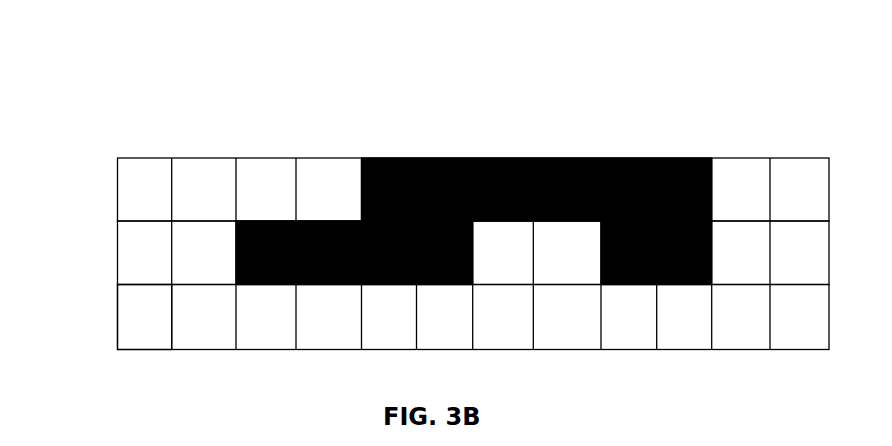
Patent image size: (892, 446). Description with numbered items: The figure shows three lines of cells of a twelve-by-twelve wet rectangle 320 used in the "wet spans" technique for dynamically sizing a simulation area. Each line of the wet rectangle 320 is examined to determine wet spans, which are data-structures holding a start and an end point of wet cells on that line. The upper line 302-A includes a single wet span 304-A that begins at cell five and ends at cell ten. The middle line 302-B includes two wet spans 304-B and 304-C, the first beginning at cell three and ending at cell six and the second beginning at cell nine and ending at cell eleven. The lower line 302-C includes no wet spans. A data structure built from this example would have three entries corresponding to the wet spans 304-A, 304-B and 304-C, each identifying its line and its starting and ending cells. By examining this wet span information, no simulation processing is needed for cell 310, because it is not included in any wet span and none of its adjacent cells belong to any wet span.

The wet rectangle 320 is at (429, 224).
The line 302-A is at (110, 199).
The line 302-B is at (110, 257).
The line 302-C is at (110, 324).
The wet span 304-A is at (536, 148).
The wet span 304-B is at (312, 283).
The wet span 304-C is at (691, 293).
The cell 310 is at (138, 320).